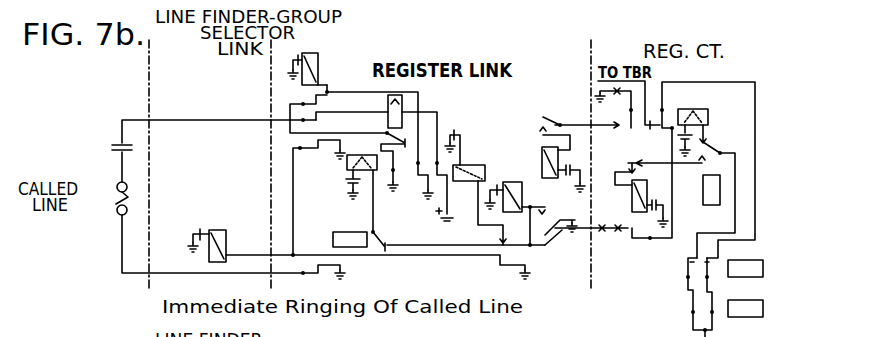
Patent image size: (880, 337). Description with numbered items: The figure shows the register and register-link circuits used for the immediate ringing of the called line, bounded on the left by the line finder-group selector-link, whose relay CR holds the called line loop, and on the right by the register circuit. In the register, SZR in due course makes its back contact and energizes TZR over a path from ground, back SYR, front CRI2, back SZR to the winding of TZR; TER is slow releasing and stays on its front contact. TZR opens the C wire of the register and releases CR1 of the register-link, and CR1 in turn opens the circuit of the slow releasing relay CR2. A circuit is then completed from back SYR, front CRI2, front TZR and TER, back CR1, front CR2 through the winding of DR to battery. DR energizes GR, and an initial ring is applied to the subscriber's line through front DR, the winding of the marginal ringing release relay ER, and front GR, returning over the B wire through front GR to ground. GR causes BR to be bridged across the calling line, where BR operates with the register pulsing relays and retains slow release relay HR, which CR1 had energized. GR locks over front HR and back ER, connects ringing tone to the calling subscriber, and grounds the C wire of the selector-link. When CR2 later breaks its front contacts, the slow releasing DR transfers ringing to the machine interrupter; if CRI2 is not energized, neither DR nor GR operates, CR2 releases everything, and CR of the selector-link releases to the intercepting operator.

The CR relay of the line finder-group selector-link CR is at (359, 254).
The GR relay GR is at (317, 69).
The marginal ringing release relay ER is at (383, 111).
The slow release relay HR is at (445, 194).
The BR relay of the register-link BR is at (350, 231).
The DR relay DR is at (475, 187).
The CR1 relay of the register-link CR1 is at (564, 154).
The CR2 relay CR2 is at (522, 214).
The TZR relay TZR is at (706, 175).
The TER relay TER is at (633, 195).
The SZR relay SZR is at (715, 200).
The CR12 relay CRI2 is at (747, 260).
The SYR relay SYR is at (746, 300).